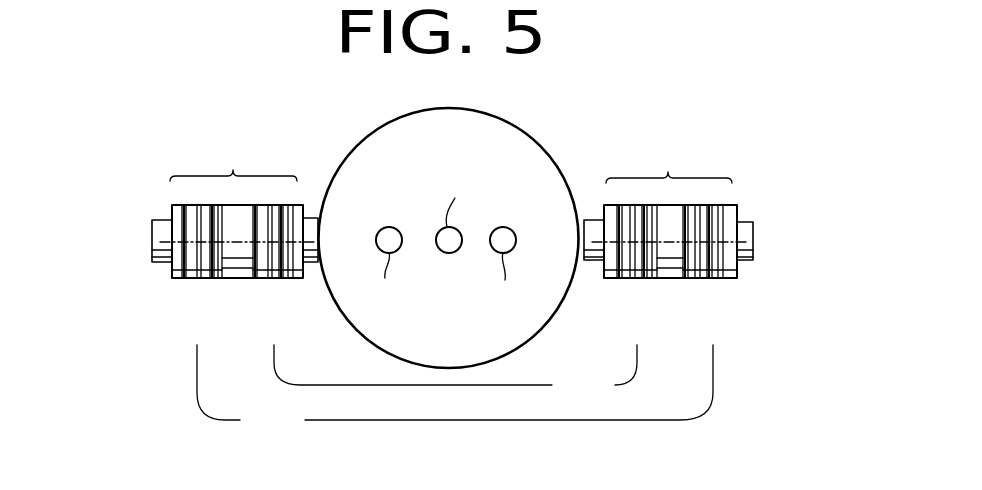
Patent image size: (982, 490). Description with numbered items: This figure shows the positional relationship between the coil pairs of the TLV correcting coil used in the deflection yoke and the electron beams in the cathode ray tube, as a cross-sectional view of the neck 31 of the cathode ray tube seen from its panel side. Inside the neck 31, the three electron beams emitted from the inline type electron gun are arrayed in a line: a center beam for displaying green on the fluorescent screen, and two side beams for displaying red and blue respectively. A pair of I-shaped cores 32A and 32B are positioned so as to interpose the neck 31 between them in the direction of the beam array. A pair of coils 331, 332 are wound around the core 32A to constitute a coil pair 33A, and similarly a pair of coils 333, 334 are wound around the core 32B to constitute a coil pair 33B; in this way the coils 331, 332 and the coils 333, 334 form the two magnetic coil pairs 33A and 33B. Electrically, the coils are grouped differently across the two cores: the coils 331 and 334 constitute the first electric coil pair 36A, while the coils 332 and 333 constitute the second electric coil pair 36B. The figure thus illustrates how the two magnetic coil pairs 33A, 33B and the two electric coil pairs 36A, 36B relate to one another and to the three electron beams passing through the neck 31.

The neck 31 is at (557, 159).
The I-shaped core 32A is at (152, 238).
The I-shaped core 32B is at (753, 238).
The coil pair 33A is at (237, 208).
The coil pair 33B is at (670, 208).
The coil 331 is at (203, 280).
The coil 332 is at (270, 280).
The coil 333 is at (640, 280).
The coil 334 is at (708, 280).
The first electric coil pair 36A is at (455, 391).
The second electric coil pair 36B is at (455, 373).